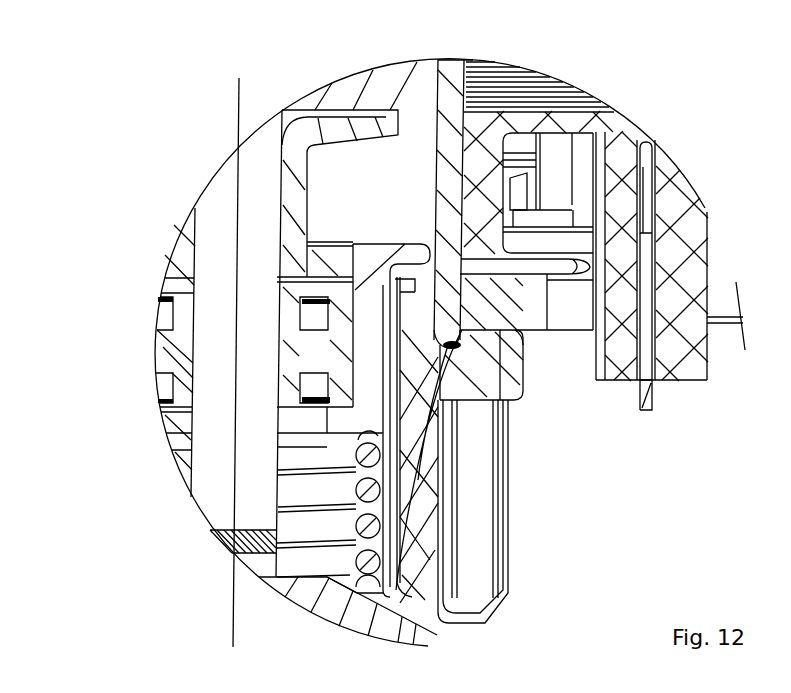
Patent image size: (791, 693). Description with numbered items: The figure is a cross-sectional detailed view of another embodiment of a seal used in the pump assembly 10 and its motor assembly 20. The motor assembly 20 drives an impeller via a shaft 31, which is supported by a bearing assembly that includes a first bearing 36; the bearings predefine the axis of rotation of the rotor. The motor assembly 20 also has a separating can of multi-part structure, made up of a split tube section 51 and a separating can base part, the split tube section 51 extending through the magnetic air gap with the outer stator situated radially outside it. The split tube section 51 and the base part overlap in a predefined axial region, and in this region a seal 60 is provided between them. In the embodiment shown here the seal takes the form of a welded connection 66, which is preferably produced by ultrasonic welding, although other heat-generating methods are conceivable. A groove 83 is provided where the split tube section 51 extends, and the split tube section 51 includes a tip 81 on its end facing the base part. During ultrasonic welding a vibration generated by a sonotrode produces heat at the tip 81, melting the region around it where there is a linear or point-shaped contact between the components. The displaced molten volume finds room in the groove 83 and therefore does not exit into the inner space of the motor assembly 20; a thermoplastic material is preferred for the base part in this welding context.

The pump assembly 10 is at (86, 146).
The motor assembly 20 is at (222, 127).
The shaft 31 is at (205, 205).
The first bearing 36 is at (160, 357).
The split tube section 51 is at (448, 93).
The seal 60 is at (495, 380).
The welded connection 66 is at (462, 330).
The tip 81 is at (427, 628).
The groove 83 is at (523, 345).